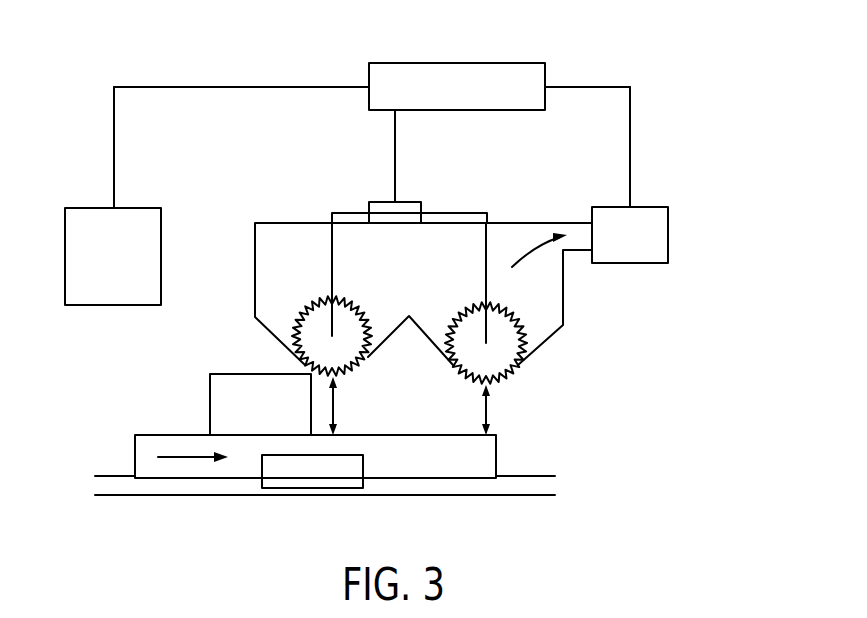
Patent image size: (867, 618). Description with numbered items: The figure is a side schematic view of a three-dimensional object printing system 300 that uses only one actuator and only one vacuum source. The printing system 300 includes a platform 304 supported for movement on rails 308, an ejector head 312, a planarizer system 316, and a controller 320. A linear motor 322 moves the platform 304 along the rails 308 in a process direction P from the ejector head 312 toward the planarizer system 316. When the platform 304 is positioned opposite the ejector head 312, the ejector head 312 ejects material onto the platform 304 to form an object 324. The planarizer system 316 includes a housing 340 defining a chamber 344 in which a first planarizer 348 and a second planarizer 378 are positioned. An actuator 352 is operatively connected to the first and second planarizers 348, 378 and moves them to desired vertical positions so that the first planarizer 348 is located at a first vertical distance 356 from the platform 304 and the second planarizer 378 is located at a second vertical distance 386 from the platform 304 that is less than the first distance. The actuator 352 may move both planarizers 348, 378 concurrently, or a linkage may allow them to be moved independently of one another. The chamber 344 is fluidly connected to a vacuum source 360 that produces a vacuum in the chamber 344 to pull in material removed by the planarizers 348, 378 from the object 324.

The three-dimensional object printing system 300 is at (104, 51).
The ejector head 312 is at (140, 207).
The planarizer system 316 is at (680, 151).
The controller 320 is at (548, 78).
The object 324 is at (210, 408).
The housing 340 is at (255, 238).
The chamber 344 is at (424, 274).
The first planarizer 348 is at (298, 334).
The actuator 352 is at (421, 207).
The first vertical distance 356 is at (335, 412).
The vacuum source 360 is at (668, 230).
The second planarizer 378 is at (520, 342).
The second vertical distance 386 is at (488, 418).
The platform 304 is at (232, 470).
The linear motor 322 is at (300, 489).
The rails 308 is at (517, 488).
The process direction P is at (170, 458).